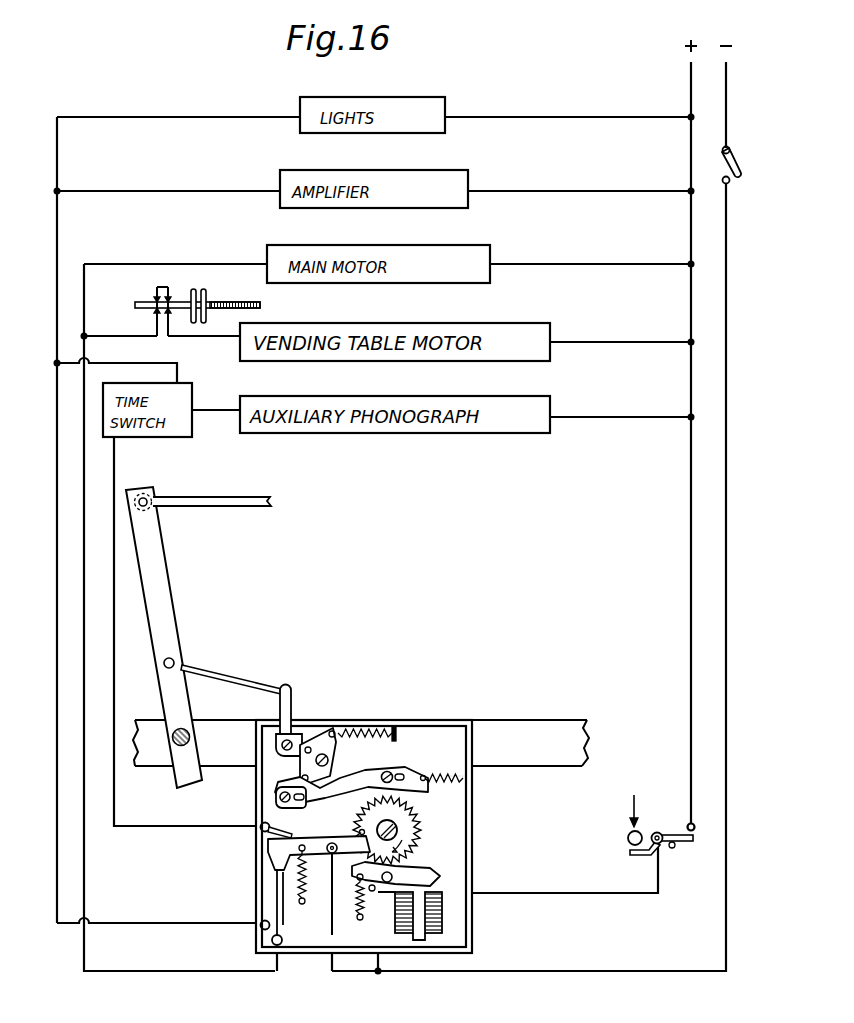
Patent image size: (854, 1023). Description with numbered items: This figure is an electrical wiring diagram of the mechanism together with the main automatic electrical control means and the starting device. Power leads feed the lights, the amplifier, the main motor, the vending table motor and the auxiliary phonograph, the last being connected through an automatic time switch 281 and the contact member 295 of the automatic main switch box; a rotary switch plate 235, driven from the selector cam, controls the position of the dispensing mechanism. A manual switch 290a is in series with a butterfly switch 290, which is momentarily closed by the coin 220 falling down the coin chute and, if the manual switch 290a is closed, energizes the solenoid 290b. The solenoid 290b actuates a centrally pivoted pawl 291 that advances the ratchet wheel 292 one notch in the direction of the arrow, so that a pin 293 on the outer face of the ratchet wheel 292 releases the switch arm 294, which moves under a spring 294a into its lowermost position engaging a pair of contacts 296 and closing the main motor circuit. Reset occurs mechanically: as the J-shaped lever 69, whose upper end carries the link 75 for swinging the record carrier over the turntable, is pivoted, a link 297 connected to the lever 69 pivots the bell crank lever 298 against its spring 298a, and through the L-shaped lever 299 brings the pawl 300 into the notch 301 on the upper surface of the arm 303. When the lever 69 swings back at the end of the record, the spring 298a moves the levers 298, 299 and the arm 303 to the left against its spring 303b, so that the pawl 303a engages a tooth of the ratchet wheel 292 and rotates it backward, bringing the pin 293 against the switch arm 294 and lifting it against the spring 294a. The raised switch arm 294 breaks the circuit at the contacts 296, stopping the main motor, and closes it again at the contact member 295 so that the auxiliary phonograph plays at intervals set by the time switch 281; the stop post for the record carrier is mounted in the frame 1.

The frame 1 is at (548, 730).
The J-shaped lever 69 is at (158, 601).
The link 75 is at (237, 496).
The coin 220 is at (627, 838).
The rotary switch plate 235 is at (243, 304).
The automatic time switch 281 is at (192, 395).
The butterfly switch 290 is at (657, 830).
The manual switch 290a is at (737, 164).
The solenoid 290b is at (440, 917).
The pawl 291 is at (440, 872).
The ratchet wheel 292 is at (410, 832).
The pin 293 is at (362, 831).
The switch arm 294 is at (312, 845).
The spring 294a is at (300, 906).
The contact member 295 is at (261, 833).
The pair of contacts 296 is at (270, 881).
The link 297 is at (233, 679).
The bell crank lever 298 is at (291, 708).
The spring 298a is at (380, 732).
The L-shaped lever 299 is at (343, 728).
The pawl 300 is at (282, 771).
The notch 301 is at (320, 790).
The arm 303 is at (413, 776).
The pawl 303a is at (420, 792).
The spring 303b is at (447, 778).